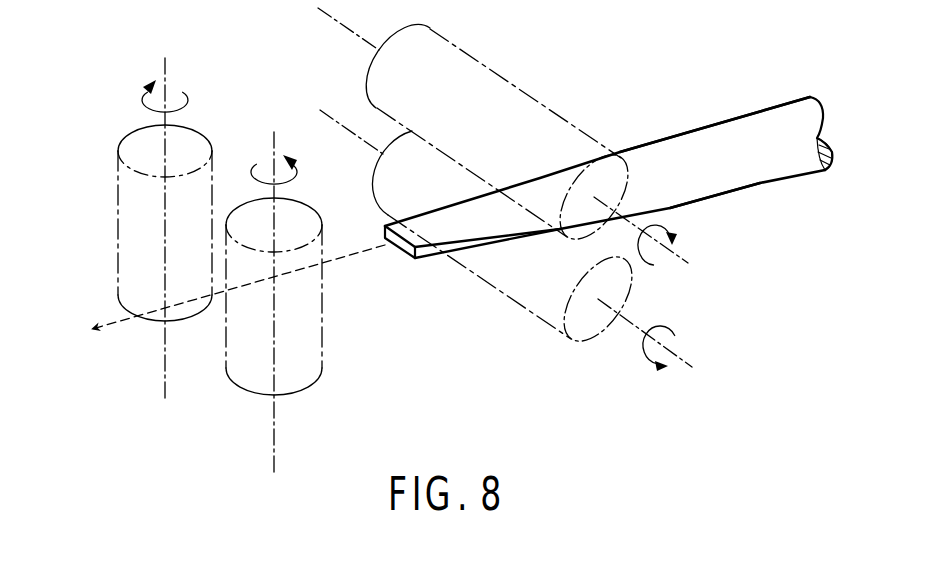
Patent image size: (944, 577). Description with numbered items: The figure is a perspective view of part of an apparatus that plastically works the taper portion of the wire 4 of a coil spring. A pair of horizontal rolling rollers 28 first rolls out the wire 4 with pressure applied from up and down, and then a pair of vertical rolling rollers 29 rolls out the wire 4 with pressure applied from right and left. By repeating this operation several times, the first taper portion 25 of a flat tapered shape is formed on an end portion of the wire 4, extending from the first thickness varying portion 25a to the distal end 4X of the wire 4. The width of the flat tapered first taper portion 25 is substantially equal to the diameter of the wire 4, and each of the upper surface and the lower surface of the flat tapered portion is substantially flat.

The wire 4 is at (598, 185).
The distal end of the wire 4X is at (405, 252).
The first taper portion 25 is at (605, 168).
The first thickness varying portion 25a is at (680, 152).
The horizontal rolling rollers 28 is at (508, 66).
The vertical rolling rollers 29 is at (334, 348).